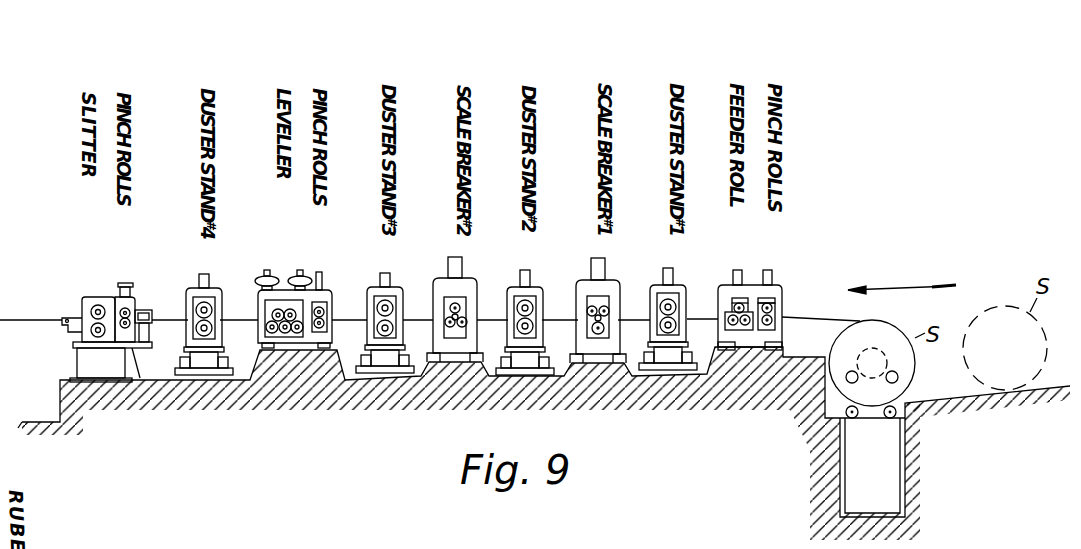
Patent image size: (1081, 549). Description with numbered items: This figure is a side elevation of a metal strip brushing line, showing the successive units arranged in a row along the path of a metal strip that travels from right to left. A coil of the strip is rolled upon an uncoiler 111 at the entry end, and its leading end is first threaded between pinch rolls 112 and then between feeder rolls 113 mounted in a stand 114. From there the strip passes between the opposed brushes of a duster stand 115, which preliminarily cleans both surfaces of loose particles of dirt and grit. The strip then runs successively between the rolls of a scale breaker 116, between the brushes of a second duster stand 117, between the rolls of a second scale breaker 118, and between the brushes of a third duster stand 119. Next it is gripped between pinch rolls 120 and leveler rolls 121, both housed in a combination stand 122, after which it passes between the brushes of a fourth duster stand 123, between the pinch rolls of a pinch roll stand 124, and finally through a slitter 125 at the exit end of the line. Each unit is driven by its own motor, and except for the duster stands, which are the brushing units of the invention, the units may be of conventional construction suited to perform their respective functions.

The uncoiler 111 is at (893, 414).
The pinch rolls 112 is at (773, 305).
The feeder rolls 113 is at (740, 330).
The stand 114 is at (773, 347).
The duster stand 115 is at (688, 300).
The scale breaker 116 is at (620, 295).
The second duster stand 117 is at (545, 297).
The second scale breaker 118 is at (480, 292).
The third duster stand 119 is at (408, 292).
The pinch rolls 120 is at (312, 333).
The leveler rolls 121 is at (287, 333).
The combination stand 122 is at (306, 347).
The fourth duster stand 123 is at (235, 280).
The pinch roll stand 124 is at (130, 300).
The slitter 125 is at (90, 297).